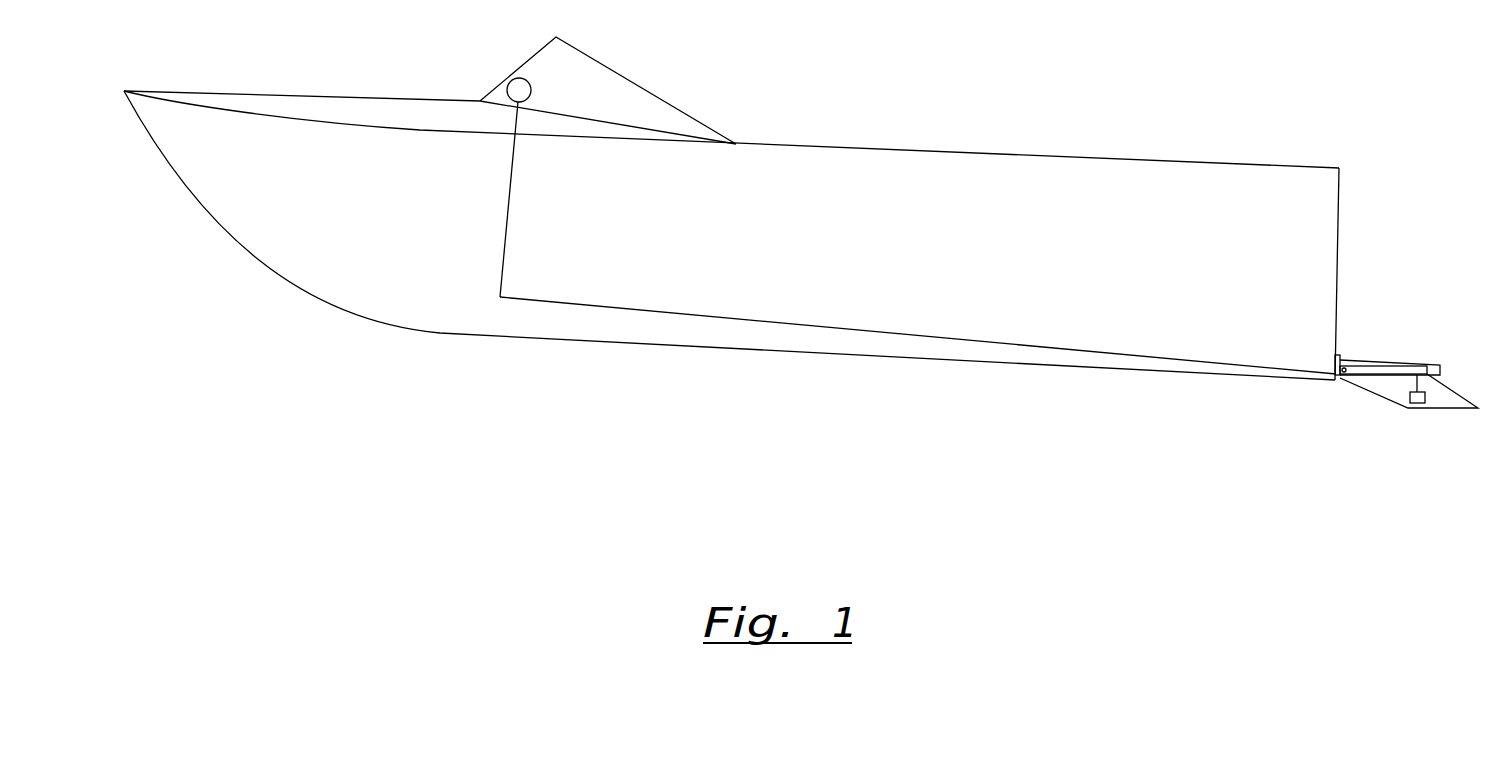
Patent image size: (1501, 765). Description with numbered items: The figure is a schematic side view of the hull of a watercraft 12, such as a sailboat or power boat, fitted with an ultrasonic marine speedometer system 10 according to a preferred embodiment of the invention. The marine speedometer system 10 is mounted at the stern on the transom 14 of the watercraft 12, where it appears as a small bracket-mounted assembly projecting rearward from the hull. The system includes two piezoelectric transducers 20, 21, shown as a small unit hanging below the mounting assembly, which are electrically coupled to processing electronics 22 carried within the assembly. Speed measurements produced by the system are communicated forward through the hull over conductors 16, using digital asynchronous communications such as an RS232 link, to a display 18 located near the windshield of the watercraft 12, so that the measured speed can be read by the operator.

The marine speedometer system 10 is at (1444, 390).
The watercraft 12 is at (1130, 167).
The transom 14 is at (1328, 230).
The conductors 16 is at (843, 328).
The display 18 is at (509, 89).
The piezoelectric transducer 20 is at (1422, 403).
The piezoelectric transducer 21 is at (1406, 434).
The processing electronics 22 is at (1370, 375).